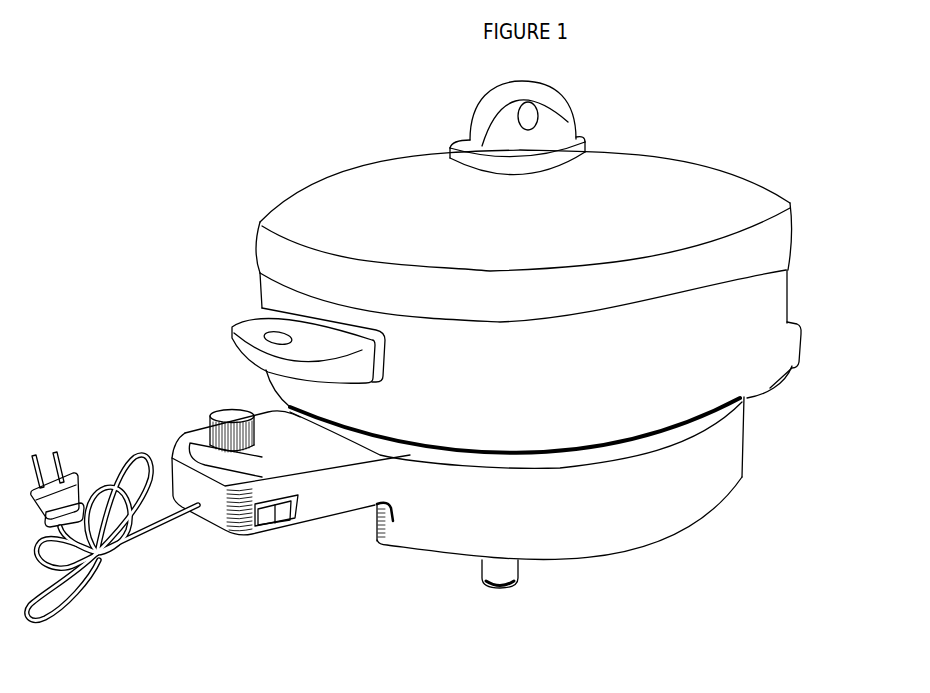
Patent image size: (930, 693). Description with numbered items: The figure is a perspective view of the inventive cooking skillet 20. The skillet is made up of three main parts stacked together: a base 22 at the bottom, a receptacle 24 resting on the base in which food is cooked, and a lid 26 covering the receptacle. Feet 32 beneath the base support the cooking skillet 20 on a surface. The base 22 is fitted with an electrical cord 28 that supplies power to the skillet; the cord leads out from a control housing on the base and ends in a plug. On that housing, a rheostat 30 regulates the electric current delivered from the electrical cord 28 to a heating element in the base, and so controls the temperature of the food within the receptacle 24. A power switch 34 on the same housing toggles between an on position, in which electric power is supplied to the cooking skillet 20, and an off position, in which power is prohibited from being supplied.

The cooking skillet 20 is at (322, 176).
The base 22 is at (727, 474).
The receptacle 24 is at (782, 290).
The lid 26 is at (629, 152).
The electrical cord 28 is at (68, 445).
The rheostat 30 is at (221, 403).
The feet 32 is at (519, 582).
The power switch 34 is at (282, 530).